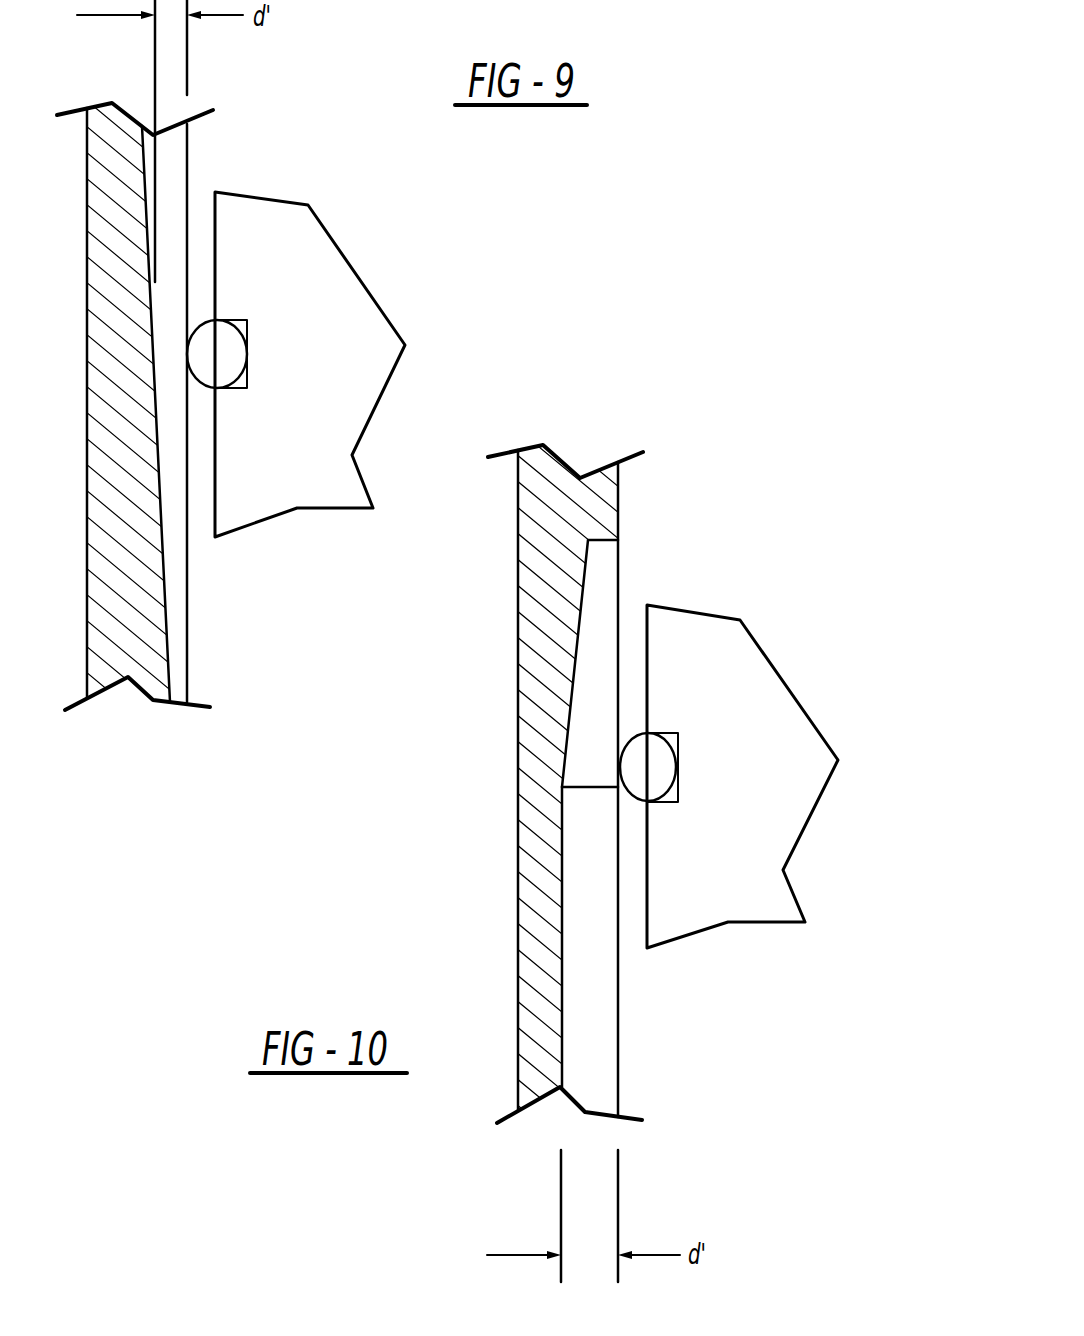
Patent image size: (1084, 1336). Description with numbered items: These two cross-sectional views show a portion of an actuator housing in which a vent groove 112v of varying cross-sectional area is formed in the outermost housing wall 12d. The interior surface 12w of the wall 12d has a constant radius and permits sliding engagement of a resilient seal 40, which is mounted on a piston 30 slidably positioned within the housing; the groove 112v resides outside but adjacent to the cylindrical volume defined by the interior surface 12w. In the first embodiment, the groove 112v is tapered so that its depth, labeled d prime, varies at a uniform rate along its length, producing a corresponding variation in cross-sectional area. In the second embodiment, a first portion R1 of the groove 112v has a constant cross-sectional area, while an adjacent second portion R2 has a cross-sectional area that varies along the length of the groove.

In FIG. 9, the outermost housing wall 12d is at (110, 311).
In FIG. 10, the outermost housing wall 12d is at (537, 625).
In FIG. 9, the interior surface 12w is at (187, 643).
In FIG. 10, the interior surface 12w is at (618, 1068).
In FIG. 9, the vent groove 112v is at (170, 547).
In FIG. 10, the vent groove 112v is at (577, 835).
In FIG. 9, the piston 30 is at (307, 275).
In FIG. 10, the piston 30 is at (737, 880).
In FIG. 9, the resilient seal 40 is at (233, 352).
In FIG. 10, the resilient seal 40 is at (655, 757).
In FIG. 10, the first portion R1 is at (597, 1010).
In FIG. 10, the second portion R2 is at (600, 595).